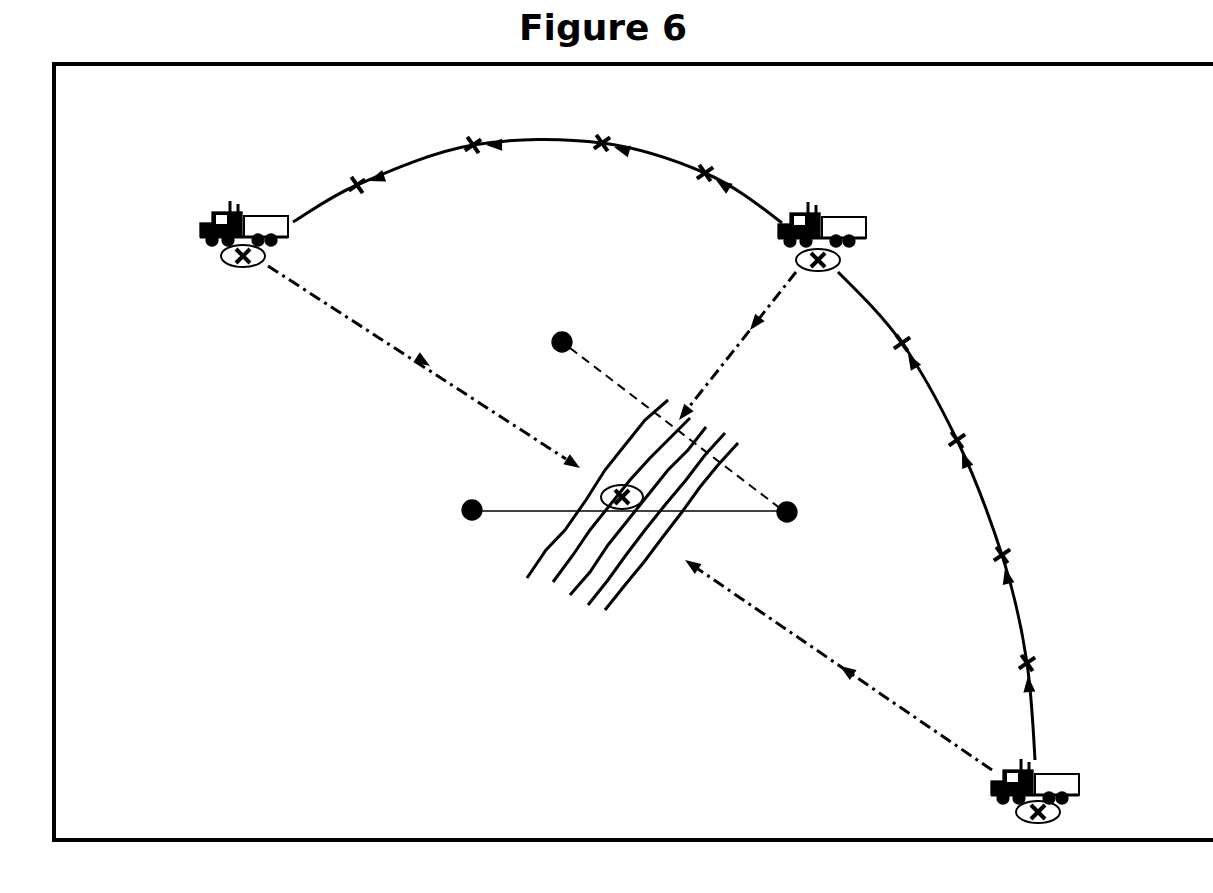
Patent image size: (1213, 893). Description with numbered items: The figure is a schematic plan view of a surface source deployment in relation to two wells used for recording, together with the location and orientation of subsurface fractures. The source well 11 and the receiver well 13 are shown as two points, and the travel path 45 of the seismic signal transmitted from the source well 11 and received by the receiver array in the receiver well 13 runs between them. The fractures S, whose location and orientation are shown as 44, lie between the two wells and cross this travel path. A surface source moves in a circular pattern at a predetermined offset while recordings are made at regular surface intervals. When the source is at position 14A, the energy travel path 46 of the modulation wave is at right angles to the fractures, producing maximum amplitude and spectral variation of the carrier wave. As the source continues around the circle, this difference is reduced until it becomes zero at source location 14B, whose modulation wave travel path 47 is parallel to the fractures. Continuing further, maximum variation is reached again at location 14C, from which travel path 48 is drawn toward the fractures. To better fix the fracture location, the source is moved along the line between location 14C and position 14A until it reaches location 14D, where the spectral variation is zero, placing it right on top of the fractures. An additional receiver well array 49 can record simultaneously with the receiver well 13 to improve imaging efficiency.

The source position A 14A is at (1070, 791).
The source location B 14B is at (837, 226).
The source location C 14C is at (228, 219).
The source location D 14D is at (595, 460).
The receiver well 13 is at (450, 519).
The source well 11 is at (810, 521).
The receiver well array 49 is at (666, 408).
The modulation wave energy travel path from location C 48 is at (425, 369).
The modulation wave energy travel path from location B 47 is at (735, 348).
The modulation wave energy travel path from location A 46 is at (837, 662).
The seismic signal travel path 45 is at (630, 529).
The fracture location and orientation 44 is at (632, 526).
The fractures S is at (489, 651).